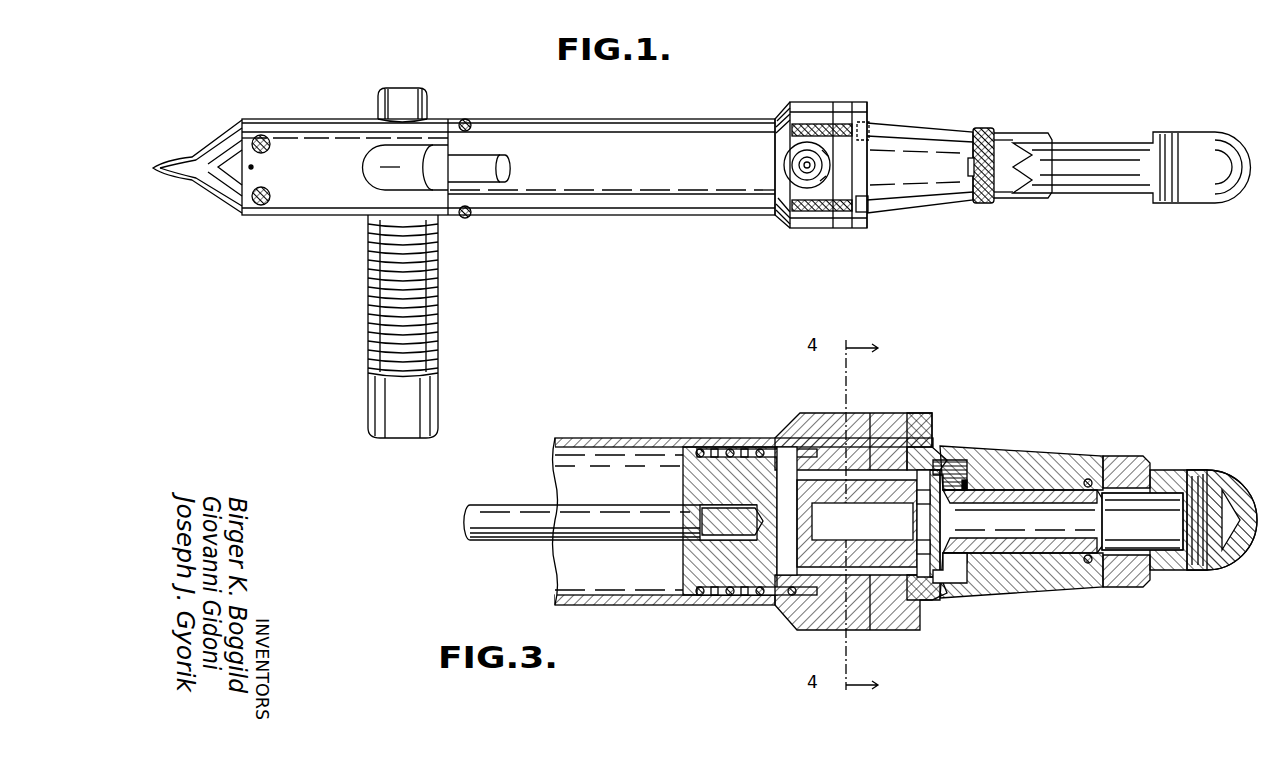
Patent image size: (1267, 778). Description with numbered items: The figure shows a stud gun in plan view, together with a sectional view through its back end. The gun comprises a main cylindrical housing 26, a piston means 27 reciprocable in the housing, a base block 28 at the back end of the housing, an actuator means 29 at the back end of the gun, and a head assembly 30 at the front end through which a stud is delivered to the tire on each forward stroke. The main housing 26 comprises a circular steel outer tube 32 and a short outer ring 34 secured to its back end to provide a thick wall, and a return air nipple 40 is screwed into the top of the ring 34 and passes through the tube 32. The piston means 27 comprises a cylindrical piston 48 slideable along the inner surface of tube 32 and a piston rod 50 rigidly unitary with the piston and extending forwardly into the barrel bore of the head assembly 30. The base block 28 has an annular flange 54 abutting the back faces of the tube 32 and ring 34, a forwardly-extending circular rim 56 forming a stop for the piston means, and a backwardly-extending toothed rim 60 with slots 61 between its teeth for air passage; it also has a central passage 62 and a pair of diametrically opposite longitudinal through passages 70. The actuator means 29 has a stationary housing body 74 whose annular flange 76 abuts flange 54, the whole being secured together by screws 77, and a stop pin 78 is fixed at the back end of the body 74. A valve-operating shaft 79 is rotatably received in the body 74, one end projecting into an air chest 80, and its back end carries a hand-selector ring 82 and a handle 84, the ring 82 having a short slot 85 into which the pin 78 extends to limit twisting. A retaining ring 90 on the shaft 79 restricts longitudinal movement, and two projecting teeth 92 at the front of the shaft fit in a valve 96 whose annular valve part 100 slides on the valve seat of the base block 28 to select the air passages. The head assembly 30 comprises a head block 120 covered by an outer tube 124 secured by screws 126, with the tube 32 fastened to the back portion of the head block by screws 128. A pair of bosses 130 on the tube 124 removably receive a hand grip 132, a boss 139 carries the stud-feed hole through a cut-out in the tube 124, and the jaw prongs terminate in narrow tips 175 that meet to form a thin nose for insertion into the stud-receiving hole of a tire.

In FIG. 1, the main cylindrical housing 26 is at (626, 170).
In FIG. 3, the piston means 27 is at (677, 496).
In FIG. 3, the base block 28 is at (775, 600).
In FIG. 1, the actuator means 29 is at (1078, 85).
In FIG. 3, the actuator means 29 is at (1152, 647).
In FIG. 1, the head assembly 30 is at (332, 90).
In FIG. 1, the outer tube 32 is at (626, 218).
In FIG. 3, the outer tube 32 is at (700, 427).
In FIG. 1, the outer ring 34 is at (818, 228).
In FIG. 3, the outer ring 34 is at (812, 414).
In FIG. 1, the return air nipple 40 is at (790, 180).
In FIG. 3, the cylindrical piston 48 is at (684, 580).
In FIG. 3, the piston rod 50 is at (522, 518).
In FIG. 1, the annular flange 54 is at (842, 222).
In FIG. 3, the annular flange 54 is at (870, 414).
In FIG. 3, the forwardly-extending circular rim 56 is at (780, 446).
In FIG. 3, the toothed rim 60 is at (857, 523).
In FIG. 3, the slots 61 is at (897, 522).
In FIG. 3, the central passage 62 is at (830, 526).
In FIG. 3, the longitudinal through passages 70 is at (915, 440).
In FIG. 1, the housing body 74 is at (929, 142).
In FIG. 3, the housing body 74 is at (1066, 458).
In FIG. 1, the annular flange 76 is at (866, 226).
In FIG. 3, the annular flange 76 is at (936, 432).
In FIG. 1, the screws 77 is at (869, 122).
In FIG. 1, the stop pin 78 is at (972, 162).
In FIG. 3, the valve-operating shaft 79 is at (1166, 508).
In FIG. 3, the air chest 80 is at (952, 590).
In FIG. 1, the hand-selector ring 82 is at (1008, 136).
In FIG. 3, the hand-selector ring 82 is at (1125, 458).
In FIG. 1, the handle 84 is at (1118, 180).
In FIG. 3, the handle 84 is at (1178, 562).
In FIG. 1, the slot 85 is at (972, 185).
In FIG. 3, the retaining ring 90 is at (975, 492).
In FIG. 3, the projecting teeth 92 is at (958, 486).
In FIG. 3, the valve 96 is at (958, 470).
In FIG. 3, the annular valve part 100 is at (940, 592).
In FIG. 1, the head block 120 is at (301, 165).
In FIG. 1, the outer tube 124 is at (296, 130).
In FIG. 1, the screws 126 is at (264, 204).
In FIG. 1, the screws 128 is at (472, 124).
In FIG. 1, the bosses 130 is at (408, 104).
In FIG. 1, the hand grip 132 is at (374, 394).
In FIG. 1, the boss 139 is at (426, 160).
In FIG. 1, the prong tips 175 is at (166, 176).